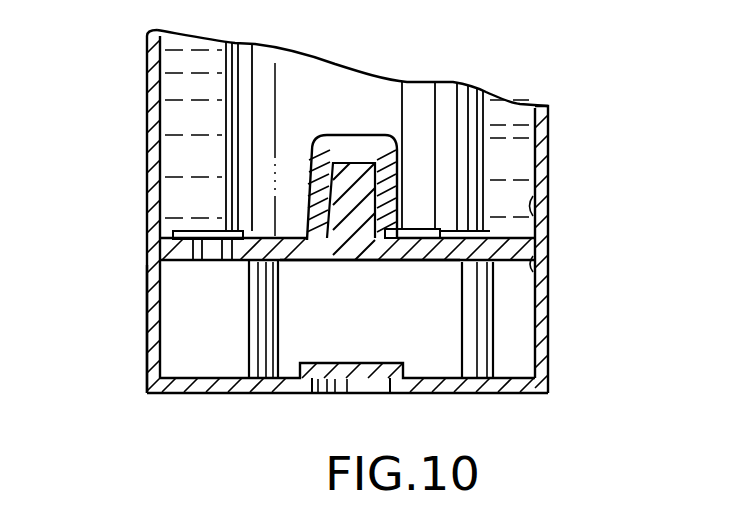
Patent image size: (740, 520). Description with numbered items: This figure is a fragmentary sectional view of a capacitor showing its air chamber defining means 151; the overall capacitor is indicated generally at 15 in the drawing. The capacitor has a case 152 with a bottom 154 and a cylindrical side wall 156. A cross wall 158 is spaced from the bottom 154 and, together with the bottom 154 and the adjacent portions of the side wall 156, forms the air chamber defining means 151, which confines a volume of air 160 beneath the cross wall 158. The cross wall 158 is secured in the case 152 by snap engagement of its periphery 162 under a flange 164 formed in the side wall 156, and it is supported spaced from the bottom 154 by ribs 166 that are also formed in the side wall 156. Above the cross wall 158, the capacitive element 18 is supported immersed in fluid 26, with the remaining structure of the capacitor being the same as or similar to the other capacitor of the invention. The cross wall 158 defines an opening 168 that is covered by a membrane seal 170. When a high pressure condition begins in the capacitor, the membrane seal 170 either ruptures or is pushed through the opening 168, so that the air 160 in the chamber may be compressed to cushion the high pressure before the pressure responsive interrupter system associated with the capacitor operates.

The sensor assembly 15 is at (117, 74).
The capacitive element 18 is at (490, 114).
The fluid 26 is at (525, 121).
The air chamber defining means 151 is at (423, 266).
The case 152 is at (134, 136).
The bottom 154 is at (280, 394).
The cylindrical side wall 156 is at (146, 291).
The cross wall 158 is at (330, 263).
The air 160 is at (412, 329).
The periphery 162 is at (535, 268).
The flange 164 is at (536, 205).
The ribs 166 is at (482, 340).
The opening 168 is at (222, 262).
The membrane seal 170 is at (188, 226).